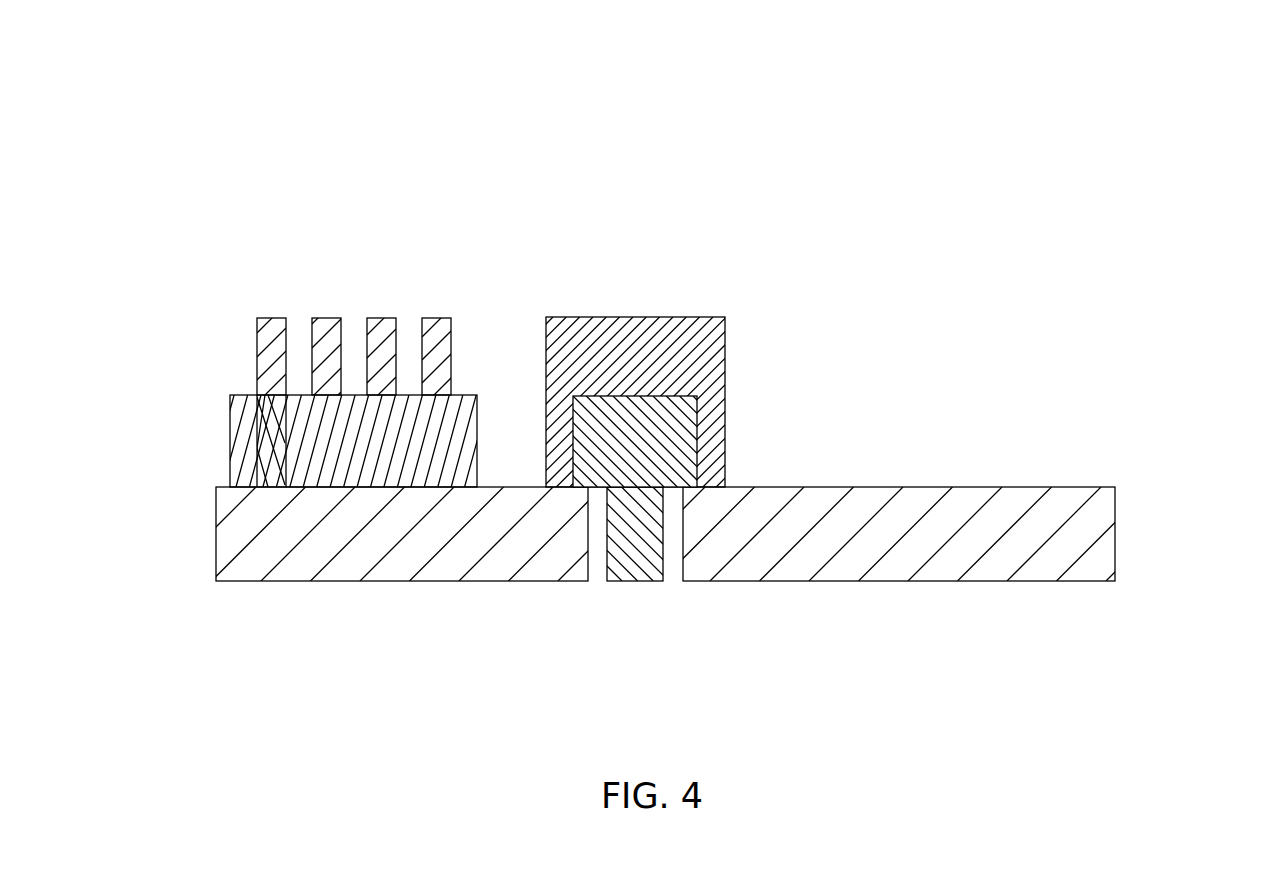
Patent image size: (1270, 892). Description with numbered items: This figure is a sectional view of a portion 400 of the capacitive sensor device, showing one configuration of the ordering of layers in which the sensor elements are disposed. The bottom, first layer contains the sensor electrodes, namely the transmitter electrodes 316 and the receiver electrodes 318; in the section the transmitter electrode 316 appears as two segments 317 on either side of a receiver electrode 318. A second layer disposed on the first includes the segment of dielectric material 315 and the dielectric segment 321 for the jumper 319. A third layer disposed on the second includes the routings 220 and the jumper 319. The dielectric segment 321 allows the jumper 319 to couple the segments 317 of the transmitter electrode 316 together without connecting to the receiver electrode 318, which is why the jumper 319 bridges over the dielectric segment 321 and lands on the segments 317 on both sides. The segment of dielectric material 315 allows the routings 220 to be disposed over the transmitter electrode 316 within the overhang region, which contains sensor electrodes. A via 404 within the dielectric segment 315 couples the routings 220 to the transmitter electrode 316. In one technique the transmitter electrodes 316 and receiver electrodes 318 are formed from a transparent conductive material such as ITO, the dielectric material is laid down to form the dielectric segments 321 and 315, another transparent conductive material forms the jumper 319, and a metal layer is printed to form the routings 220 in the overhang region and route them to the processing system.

The portion 400 is at (236, 72).
The routings 220 is at (272, 317).
The segment of dielectric material 315 is at (335, 453).
The via 404 is at (258, 445).
The jumper 319 is at (617, 368).
The dielectric segment 321 is at (617, 453).
The segments 317 is at (382, 548).
The receiver electrodes 318 is at (617, 548).
The transmitter electrodes 316 is at (513, 602).